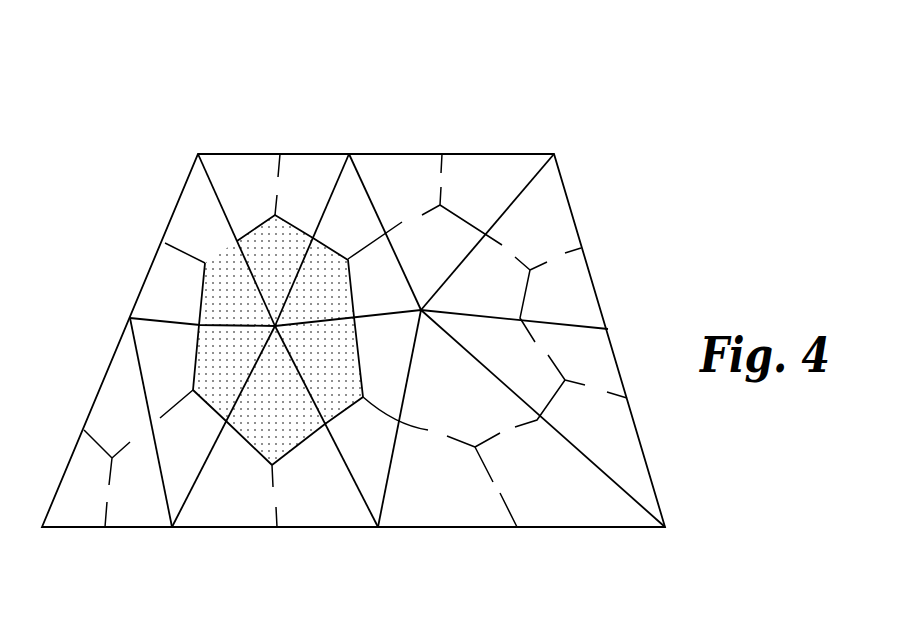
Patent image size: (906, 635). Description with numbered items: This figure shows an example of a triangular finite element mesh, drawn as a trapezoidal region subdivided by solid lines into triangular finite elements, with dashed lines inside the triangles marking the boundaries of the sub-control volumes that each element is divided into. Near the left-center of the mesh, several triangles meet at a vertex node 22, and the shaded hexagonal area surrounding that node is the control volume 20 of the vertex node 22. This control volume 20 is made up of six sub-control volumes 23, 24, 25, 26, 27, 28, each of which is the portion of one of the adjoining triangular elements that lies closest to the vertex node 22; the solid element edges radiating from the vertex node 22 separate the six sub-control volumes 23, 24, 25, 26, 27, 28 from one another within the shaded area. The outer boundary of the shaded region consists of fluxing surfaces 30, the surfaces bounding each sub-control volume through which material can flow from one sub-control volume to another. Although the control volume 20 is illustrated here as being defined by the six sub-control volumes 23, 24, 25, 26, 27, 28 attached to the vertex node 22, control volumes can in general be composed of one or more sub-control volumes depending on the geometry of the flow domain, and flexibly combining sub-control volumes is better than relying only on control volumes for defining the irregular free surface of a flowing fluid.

The control volume 20 is at (274, 95).
The vertex node 22 is at (267, 318).
The sub-control volume 23 is at (203, 278).
The sub-control volume 24 is at (270, 250).
The sub-control volume 25 is at (325, 262).
The sub-control volume 26 is at (340, 378).
The sub-control volume 27 is at (282, 425).
The sub-control volume 28 is at (215, 345).
The fluxing surface 30 is at (207, 407).